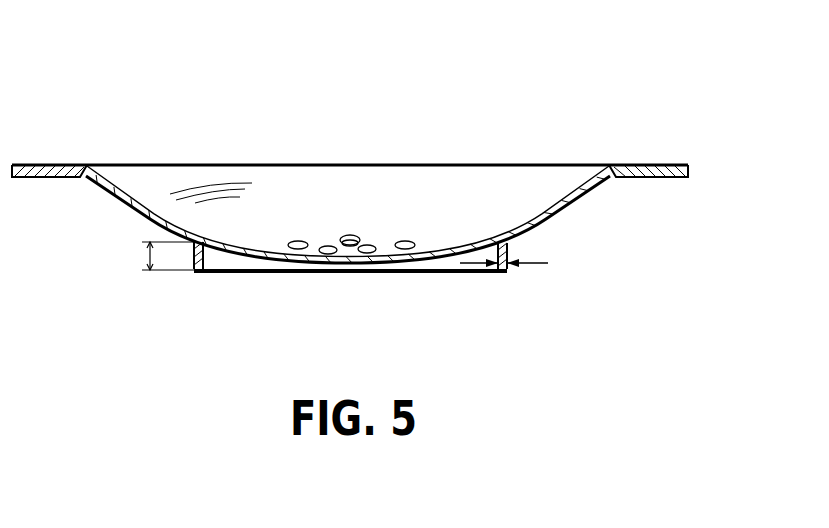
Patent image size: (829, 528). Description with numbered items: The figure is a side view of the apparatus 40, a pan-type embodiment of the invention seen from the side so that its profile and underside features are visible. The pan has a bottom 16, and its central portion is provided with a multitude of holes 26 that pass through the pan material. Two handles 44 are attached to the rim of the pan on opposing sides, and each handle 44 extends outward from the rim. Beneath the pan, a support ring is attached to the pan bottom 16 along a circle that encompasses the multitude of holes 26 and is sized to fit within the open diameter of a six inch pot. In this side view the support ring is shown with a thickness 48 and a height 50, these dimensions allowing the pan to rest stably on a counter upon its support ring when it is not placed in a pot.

The apparatus 40 is at (139, 72).
The handles 44 is at (45, 171).
The height 50 is at (147, 257).
The bottom 16 is at (347, 268).
The thickness 48 is at (504, 270).
The holes 26 is at (284, 265).